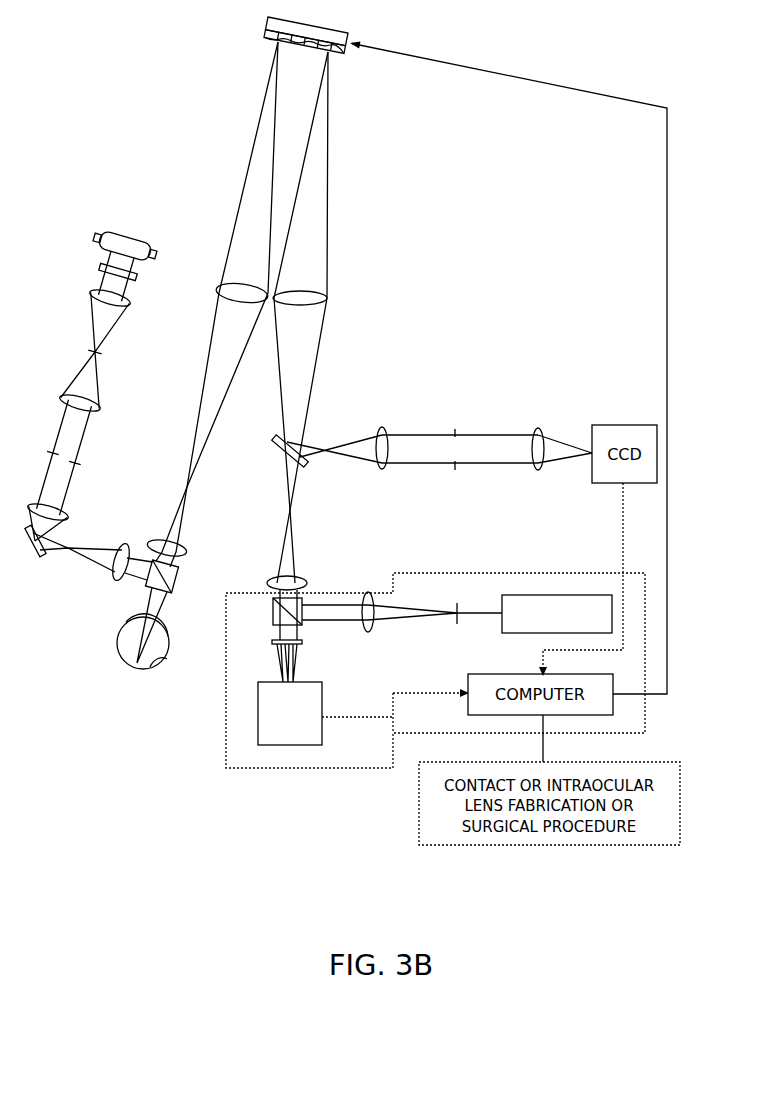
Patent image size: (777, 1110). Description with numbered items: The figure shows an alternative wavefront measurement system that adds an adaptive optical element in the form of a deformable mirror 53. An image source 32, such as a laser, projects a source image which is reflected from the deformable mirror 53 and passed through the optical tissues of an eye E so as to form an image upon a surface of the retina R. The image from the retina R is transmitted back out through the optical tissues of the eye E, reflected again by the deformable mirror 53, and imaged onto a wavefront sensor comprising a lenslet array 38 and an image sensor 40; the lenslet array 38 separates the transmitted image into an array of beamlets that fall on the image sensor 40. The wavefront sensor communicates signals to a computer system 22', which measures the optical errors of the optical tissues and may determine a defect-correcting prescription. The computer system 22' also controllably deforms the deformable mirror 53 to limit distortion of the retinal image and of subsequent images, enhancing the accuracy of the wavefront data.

The adaptive optical element 53 is at (263, 38).
The image source 32 is at (558, 595).
The lenslet array 38 is at (305, 642).
The image sensor 40 is at (308, 684).
The computer system 22' is at (475, 670).
The eye E is at (109, 658).
The retina R is at (158, 660).